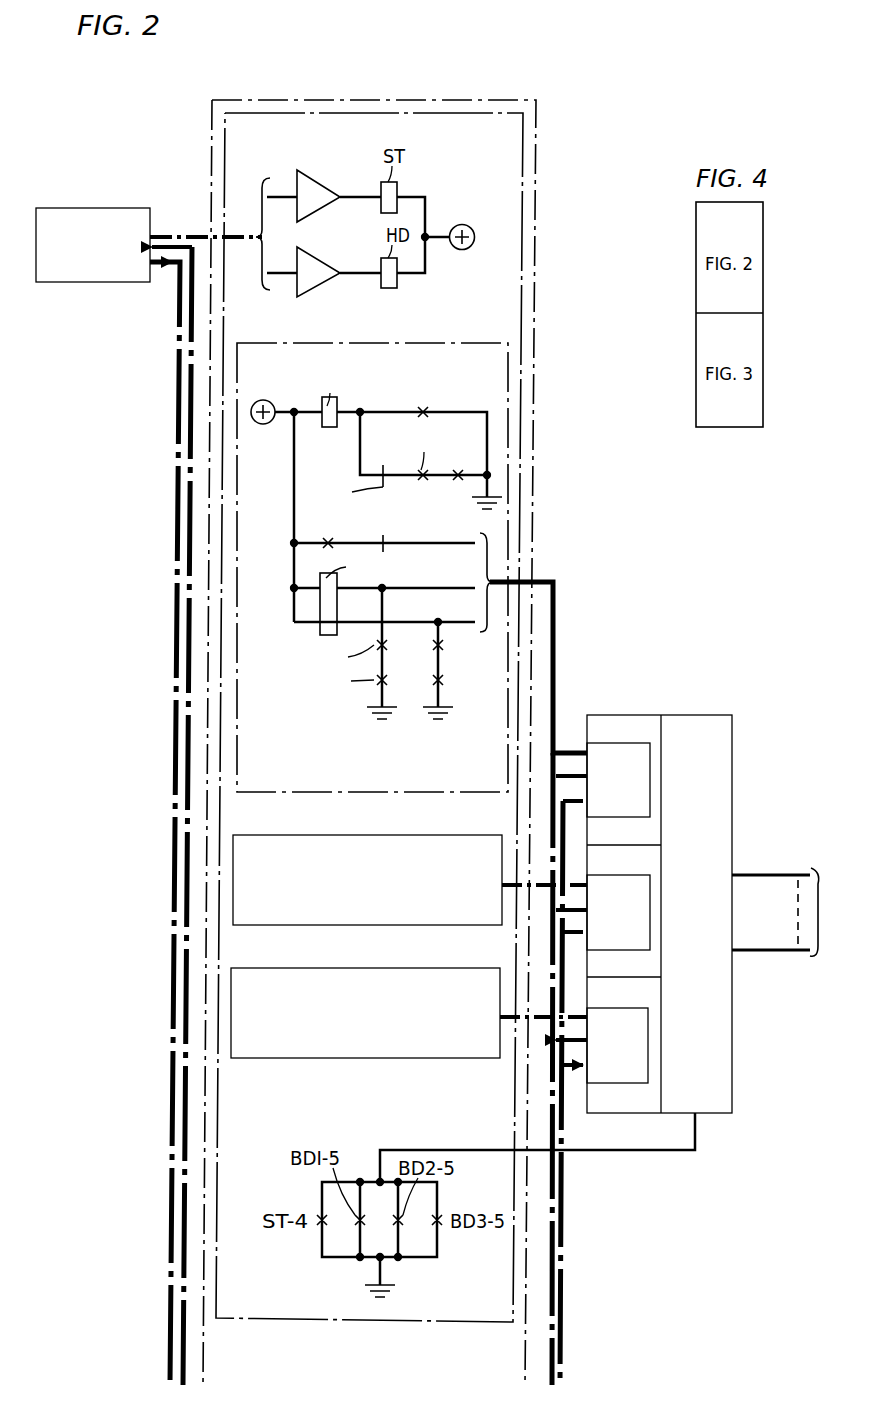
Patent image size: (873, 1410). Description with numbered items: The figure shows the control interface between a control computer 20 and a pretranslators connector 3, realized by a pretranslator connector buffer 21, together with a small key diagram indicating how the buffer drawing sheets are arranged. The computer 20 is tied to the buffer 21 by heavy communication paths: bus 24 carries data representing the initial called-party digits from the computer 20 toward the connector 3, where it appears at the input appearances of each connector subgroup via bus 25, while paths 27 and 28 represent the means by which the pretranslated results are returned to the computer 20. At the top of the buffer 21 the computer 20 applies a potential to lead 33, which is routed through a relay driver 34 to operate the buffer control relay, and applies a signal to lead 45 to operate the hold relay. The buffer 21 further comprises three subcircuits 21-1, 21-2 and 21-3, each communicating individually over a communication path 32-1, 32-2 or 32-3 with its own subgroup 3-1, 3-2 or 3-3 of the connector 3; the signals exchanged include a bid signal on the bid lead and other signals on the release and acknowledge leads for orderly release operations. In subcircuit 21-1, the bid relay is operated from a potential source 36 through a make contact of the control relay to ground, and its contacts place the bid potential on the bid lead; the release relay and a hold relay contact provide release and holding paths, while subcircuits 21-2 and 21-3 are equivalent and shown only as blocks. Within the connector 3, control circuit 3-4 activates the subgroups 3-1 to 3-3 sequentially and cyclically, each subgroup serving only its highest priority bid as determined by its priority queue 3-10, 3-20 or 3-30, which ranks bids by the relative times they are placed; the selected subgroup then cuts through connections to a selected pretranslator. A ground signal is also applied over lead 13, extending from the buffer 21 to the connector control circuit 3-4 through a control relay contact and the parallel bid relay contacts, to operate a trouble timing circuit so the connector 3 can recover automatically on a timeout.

The computer 20 is at (107, 210).
The buffer 21 is at (576, 90).
The buffer subcircuit 21-1 is at (372, 567).
The buffer subcircuit 21-2 is at (367, 880).
The buffer subcircuit 21-3 is at (365, 1013).
The bus 24 is at (177, 668).
The communication path 28 is at (190, 742).
The lead 33 is at (281, 192).
The relay driver 34 is at (320, 190).
The lead 45 is at (277, 270).
The potential source 36 is at (261, 398).
The communication path 32-1 is at (553, 578).
The communication path 32-2 is at (506, 880).
The communication path 32-3 is at (506, 1012).
The pretranslators connector 3 is at (691, 1000).
The connector subgroup 3-1 is at (638, 728).
The connector subgroup 3-2 is at (638, 857).
The connector subgroup 3-3 is at (635, 992).
The connector control circuit 3-4 is at (696, 913).
The priority queue circuit 3-10 is at (598, 757).
The priority queue circuit 3-20 is at (632, 940).
The priority queue circuit 3-30 is at (625, 1072).
The lead 13 is at (577, 1152).
The communication path 27 is at (548, 1226).
The bus 25 is at (560, 1251).